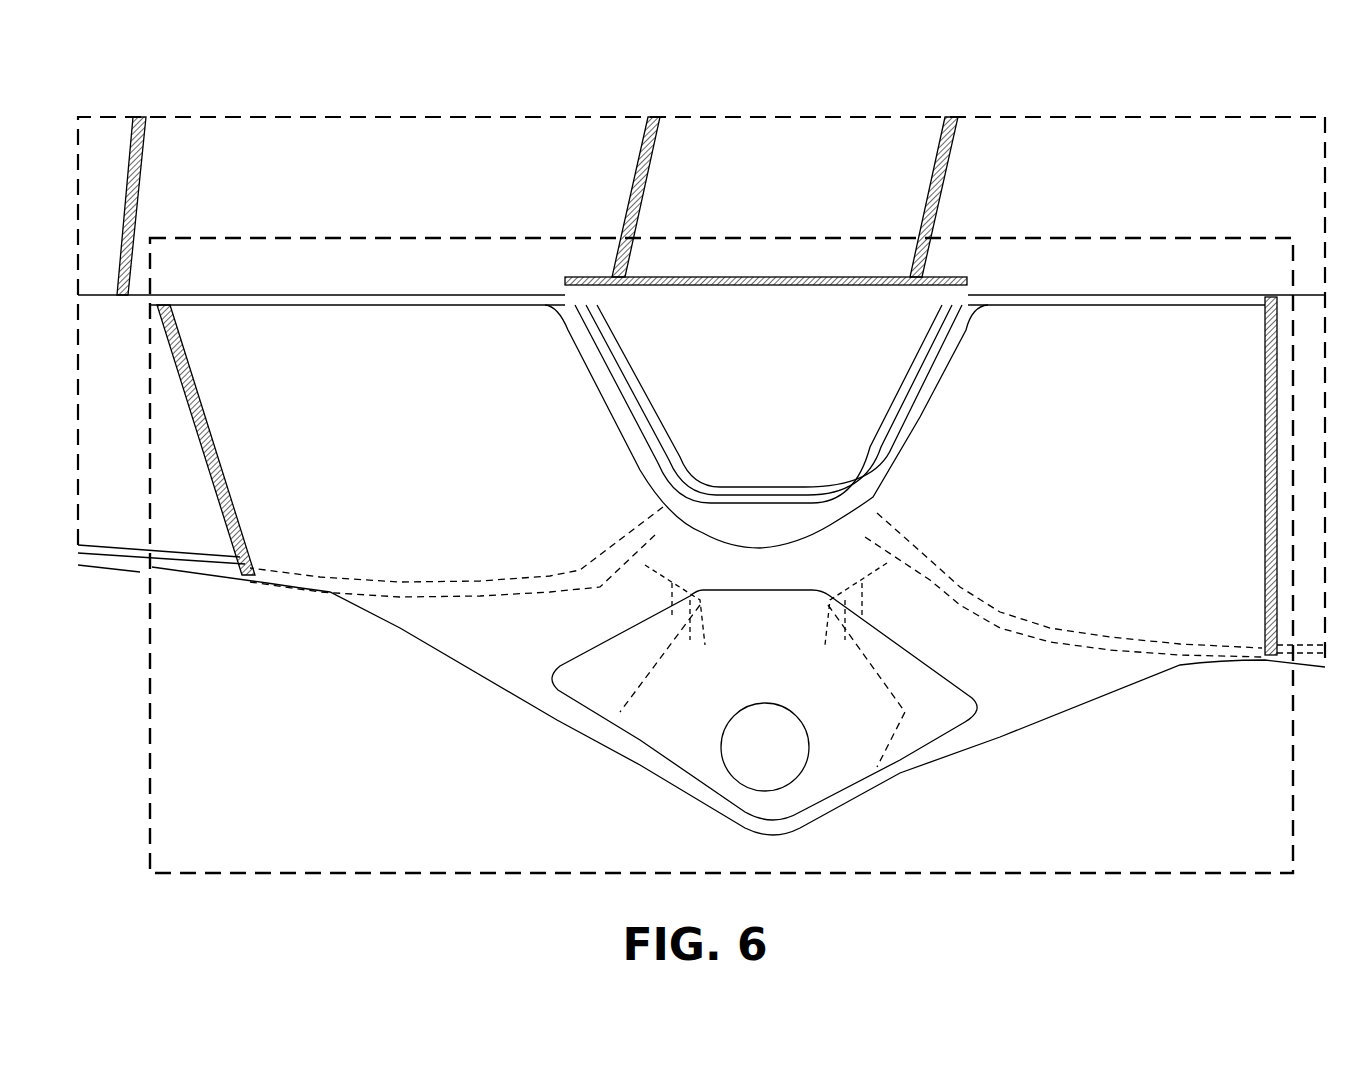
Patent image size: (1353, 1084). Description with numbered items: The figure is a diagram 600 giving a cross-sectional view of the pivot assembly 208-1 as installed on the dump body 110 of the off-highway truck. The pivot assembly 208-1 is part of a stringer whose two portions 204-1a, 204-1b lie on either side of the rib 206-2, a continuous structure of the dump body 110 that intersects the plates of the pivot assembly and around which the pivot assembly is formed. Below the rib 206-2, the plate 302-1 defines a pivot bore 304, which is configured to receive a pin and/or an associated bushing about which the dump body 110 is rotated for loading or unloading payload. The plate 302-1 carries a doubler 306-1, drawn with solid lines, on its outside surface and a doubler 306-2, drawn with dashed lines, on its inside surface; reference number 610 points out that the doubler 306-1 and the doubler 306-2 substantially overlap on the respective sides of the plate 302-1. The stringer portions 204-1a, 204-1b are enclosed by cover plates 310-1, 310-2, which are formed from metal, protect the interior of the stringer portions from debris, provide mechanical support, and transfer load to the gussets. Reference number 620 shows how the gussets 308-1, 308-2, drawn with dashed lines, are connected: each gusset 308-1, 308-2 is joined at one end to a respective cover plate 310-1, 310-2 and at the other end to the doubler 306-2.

The diagram 600 is at (183, 64).
The dump body 110 is at (701, 376).
The pivot assembly 208-1 is at (1172, 238).
The rib 206-2 is at (731, 375).
The portion of the stringer 204-1a is at (383, 449).
The portion of the stringer 204-1b is at (1099, 432).
The plate 302-1 is at (1020, 725).
The doubler 306-1 is at (872, 684).
The doubler 306-2 is at (882, 760).
The pivot bore 304 is at (745, 759).
The cover plate 310-1 is at (392, 582).
The cover plate 310-2 is at (1133, 640).
The gusset 308-1 is at (668, 590).
The gusset 308-2 is at (867, 583).
The reference number 620 is at (662, 541).
The reference number 610 is at (690, 730).